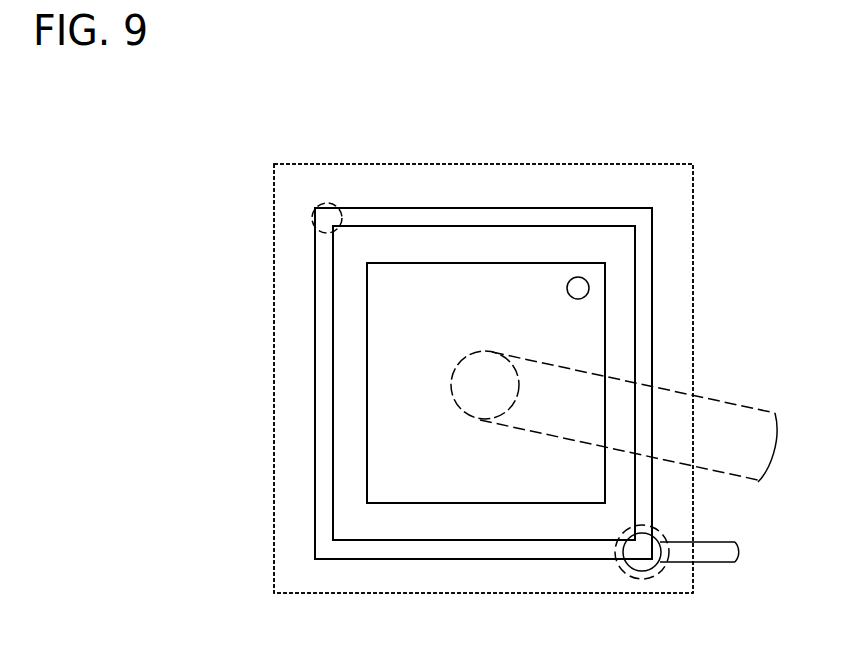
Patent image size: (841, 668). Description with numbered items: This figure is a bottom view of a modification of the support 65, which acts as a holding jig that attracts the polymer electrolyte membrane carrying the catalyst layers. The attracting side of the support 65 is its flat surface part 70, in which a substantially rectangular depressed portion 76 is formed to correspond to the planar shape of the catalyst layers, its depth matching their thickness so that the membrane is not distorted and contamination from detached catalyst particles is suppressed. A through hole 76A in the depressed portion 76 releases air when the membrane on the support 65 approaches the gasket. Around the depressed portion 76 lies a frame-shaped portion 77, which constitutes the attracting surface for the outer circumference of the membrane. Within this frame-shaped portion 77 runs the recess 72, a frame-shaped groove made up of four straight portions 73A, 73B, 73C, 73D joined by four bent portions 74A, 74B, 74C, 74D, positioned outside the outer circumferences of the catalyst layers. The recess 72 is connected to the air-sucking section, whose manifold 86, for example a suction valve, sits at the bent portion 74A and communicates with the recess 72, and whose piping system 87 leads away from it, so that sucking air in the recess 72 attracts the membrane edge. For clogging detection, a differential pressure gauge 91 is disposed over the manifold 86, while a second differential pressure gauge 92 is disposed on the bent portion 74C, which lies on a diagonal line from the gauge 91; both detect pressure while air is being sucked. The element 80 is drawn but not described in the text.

The support 65 is at (694, 203).
The flat surface part 70 is at (428, 378).
The recess 72 is at (487, 381).
The straight portion 73A is at (484, 560).
The straight portion 73B is at (314, 380).
The straight portion 73C is at (481, 209).
The straight portion 73D is at (653, 317).
The bent portion 74A is at (638, 550).
The bent portion 74B is at (322, 548).
The bent portion 74C is at (325, 209).
The bent portion 74D is at (643, 221).
The depressed portion 76 is at (367, 473).
The through hole 76A is at (567, 292).
The frame-shaped portion 77 is at (222, 551).
The arm 80 is at (739, 410).
The manifold 86 is at (655, 575).
The piping system 87 is at (718, 565).
The differential pressure gauge 91 is at (630, 580).
The differential pressure gauge 92 is at (310, 218).